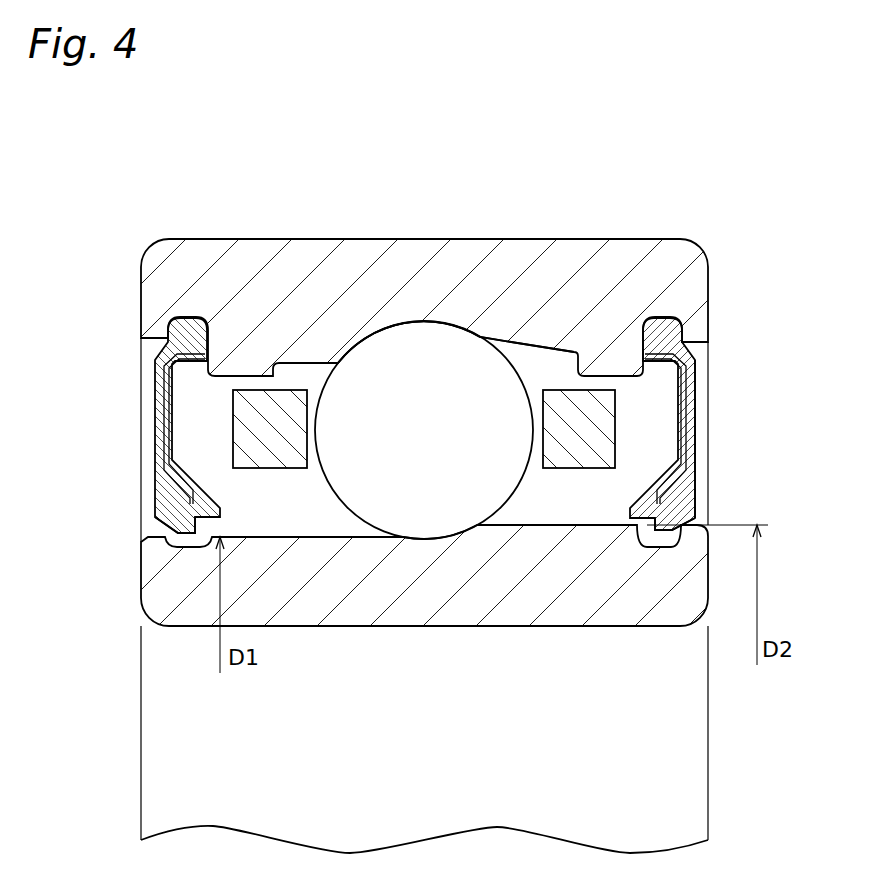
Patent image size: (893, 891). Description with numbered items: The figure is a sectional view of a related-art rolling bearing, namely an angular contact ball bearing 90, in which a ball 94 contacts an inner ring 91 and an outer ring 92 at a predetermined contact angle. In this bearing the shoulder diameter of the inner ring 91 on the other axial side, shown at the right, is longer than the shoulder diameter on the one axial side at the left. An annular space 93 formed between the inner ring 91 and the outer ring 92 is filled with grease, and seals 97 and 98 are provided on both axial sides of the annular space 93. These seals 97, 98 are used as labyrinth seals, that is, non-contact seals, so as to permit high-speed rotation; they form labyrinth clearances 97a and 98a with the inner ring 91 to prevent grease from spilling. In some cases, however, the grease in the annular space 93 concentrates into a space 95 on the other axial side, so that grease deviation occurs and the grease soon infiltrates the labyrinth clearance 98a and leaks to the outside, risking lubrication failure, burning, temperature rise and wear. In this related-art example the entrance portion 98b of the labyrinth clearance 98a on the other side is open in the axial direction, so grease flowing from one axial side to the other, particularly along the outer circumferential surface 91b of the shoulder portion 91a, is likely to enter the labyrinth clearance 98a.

The angular contact ball bearing 90 is at (678, 235).
The inner ring 91 is at (428, 593).
The shoulder portion 91a is at (517, 532).
The outer circumferential surface 91b is at (562, 525).
The outer ring 92 is at (608, 262).
The annular space 93 is at (528, 355).
The ball 94 is at (393, 363).
The space 95 is at (653, 428).
The seal 97 is at (155, 492).
The labyrinth clearance 97a is at (150, 522).
The seal 98 is at (697, 455).
The labyrinth clearance 98a is at (703, 518).
The entrance portion 98b is at (624, 520).